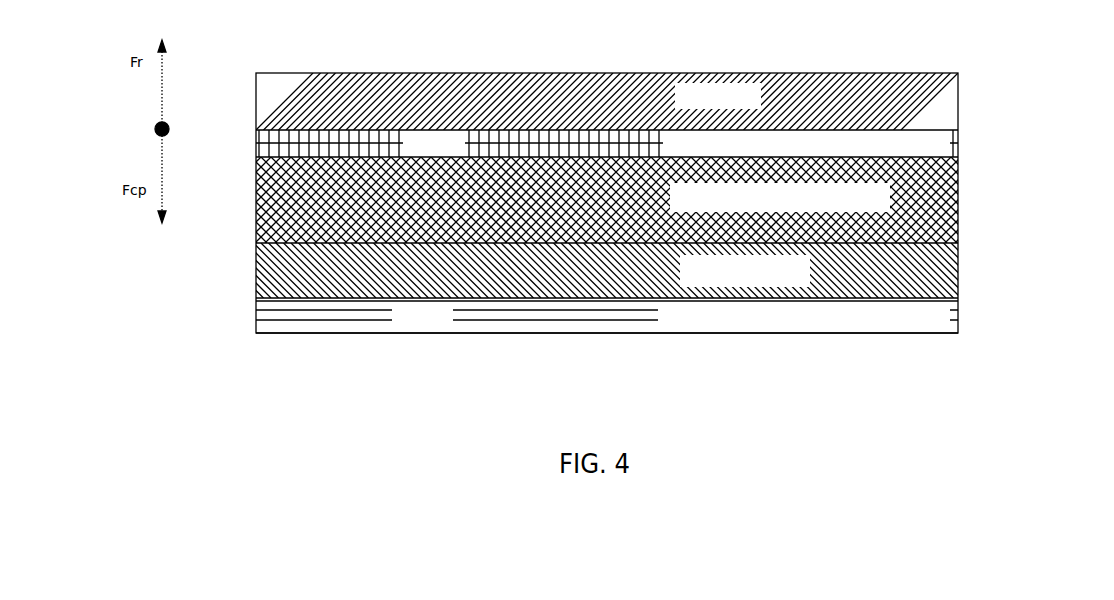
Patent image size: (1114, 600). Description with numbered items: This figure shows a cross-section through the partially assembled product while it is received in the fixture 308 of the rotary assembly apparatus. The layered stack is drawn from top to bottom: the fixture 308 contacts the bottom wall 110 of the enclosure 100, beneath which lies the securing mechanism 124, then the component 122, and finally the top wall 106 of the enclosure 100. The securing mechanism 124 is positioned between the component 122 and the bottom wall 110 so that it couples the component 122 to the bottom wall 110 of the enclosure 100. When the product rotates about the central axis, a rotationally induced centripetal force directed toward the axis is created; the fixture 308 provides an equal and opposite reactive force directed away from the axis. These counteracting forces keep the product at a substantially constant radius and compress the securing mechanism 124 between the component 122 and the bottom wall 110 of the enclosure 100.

The enclosure 100 is at (960, 313).
The top panel 106 is at (440, 328).
The bottom panel 110 is at (452, 156).
The component 122 is at (256, 268).
The securing mechanism 124 is at (256, 197).
The fixture 308 is at (256, 100).